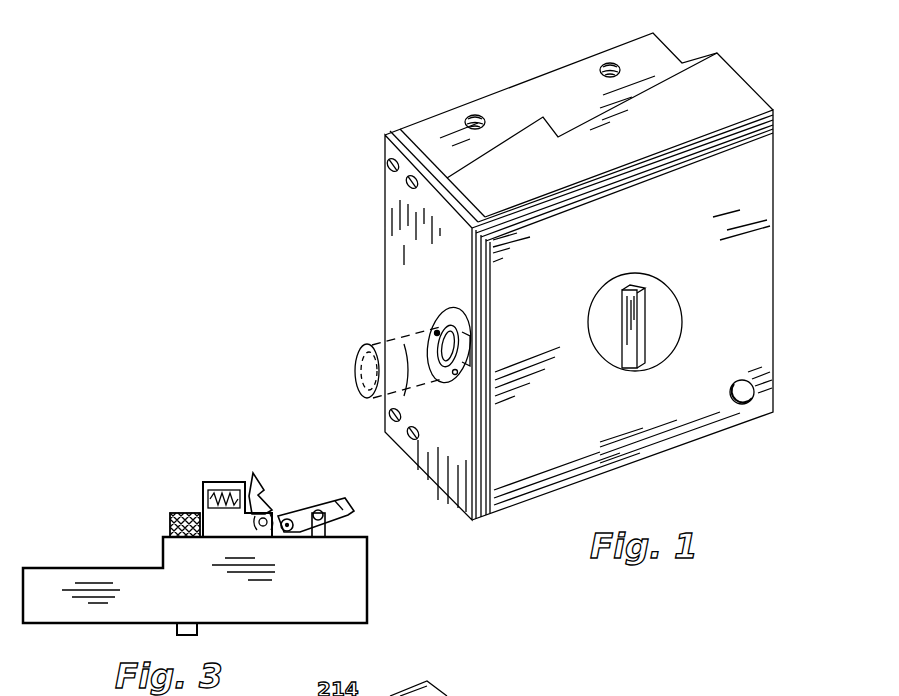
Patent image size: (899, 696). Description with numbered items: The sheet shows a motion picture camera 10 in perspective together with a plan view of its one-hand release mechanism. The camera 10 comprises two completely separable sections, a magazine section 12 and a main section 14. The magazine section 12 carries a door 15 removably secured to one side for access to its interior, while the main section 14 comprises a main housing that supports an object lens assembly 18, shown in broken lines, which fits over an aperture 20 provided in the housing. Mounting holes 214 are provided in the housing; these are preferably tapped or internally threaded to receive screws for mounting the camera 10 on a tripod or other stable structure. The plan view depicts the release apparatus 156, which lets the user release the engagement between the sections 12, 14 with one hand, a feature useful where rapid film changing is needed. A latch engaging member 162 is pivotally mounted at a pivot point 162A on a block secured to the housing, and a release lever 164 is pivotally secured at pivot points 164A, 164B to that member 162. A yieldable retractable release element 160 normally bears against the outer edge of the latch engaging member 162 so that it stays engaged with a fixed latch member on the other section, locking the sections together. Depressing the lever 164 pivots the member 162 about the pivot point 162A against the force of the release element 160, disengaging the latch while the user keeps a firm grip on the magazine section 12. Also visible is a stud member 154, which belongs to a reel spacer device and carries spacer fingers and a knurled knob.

In FIG. 1, the motion picture camera 10 is at (764, 420).
In FIG. 1, the magazine section 12 is at (752, 153).
In FIG. 3, the magazine section 12 is at (298, 593).
In FIG. 1, the main section 14 is at (649, 49).
In FIG. 1, the door 15 is at (622, 256).
In FIG. 1, the object lens assembly 18 is at (351, 362).
In FIG. 1, the aperture 20 is at (463, 352).
In FIG. 1, the mounting holes 214 is at (603, 65).
In FIG. 3, the stud member 154 is at (168, 527).
In FIG. 3, the release apparatus 156 is at (192, 483).
In FIG. 3, the retractable release element 160 is at (247, 492).
In FIG. 3, the latch engaging member 162 is at (267, 478).
In FIG. 3, the pivot point 162A is at (270, 527).
In FIG. 3, the release lever 164 is at (338, 508).
In FIG. 3, the pivot point 164A is at (284, 519).
In FIG. 3, the pivot point 164B is at (356, 519).